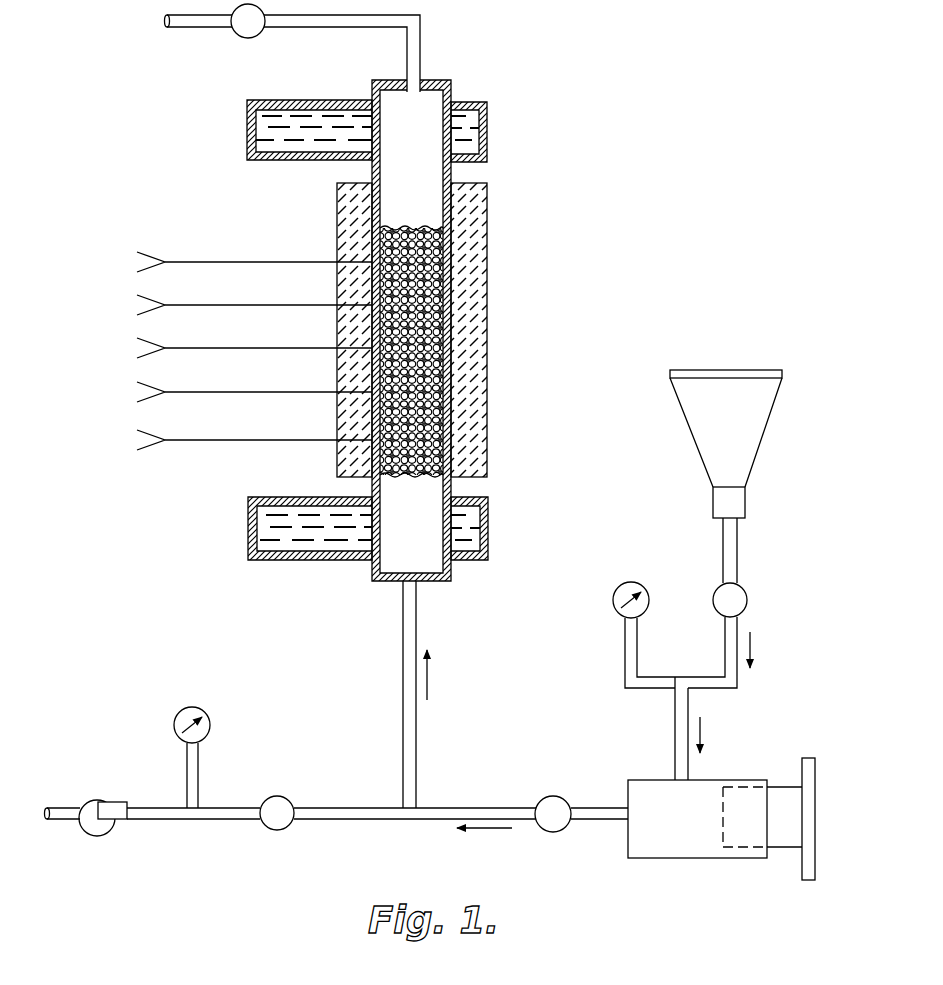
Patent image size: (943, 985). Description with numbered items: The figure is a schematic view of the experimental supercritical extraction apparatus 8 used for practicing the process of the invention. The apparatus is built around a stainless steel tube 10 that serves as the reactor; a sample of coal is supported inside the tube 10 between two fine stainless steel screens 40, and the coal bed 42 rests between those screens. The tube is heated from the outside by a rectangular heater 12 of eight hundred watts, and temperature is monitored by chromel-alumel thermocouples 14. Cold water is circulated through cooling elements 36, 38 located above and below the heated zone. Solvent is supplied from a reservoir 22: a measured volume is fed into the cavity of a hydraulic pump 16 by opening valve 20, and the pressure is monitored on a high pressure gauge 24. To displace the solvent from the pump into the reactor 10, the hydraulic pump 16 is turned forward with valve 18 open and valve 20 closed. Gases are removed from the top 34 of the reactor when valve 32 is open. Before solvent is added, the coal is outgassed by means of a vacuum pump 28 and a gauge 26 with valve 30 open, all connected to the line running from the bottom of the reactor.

The experimental apparatus 8 is at (518, 120).
The stainless steel tube 10 is at (448, 574).
The rectangular heater 12 is at (337, 215).
The chromel-alumel thermocouples 14 is at (273, 348).
The hydraulic pump 16 is at (650, 778).
The valve 18 is at (548, 794).
The valve 20 is at (748, 596).
The reservoir 22 is at (708, 370).
The high pressure gauge 24 is at (622, 581).
The gauge 26 is at (212, 722).
The vacuum pump 28 is at (105, 802).
The valve 30 is at (283, 794).
The valve 32 is at (235, 36).
The top of the reactor 34 is at (447, 78).
The cooling element 36 is at (247, 128).
The cooling element 38 is at (272, 560).
The stainless steel screens 40 is at (430, 224).
The bed of beads 42 is at (436, 294).